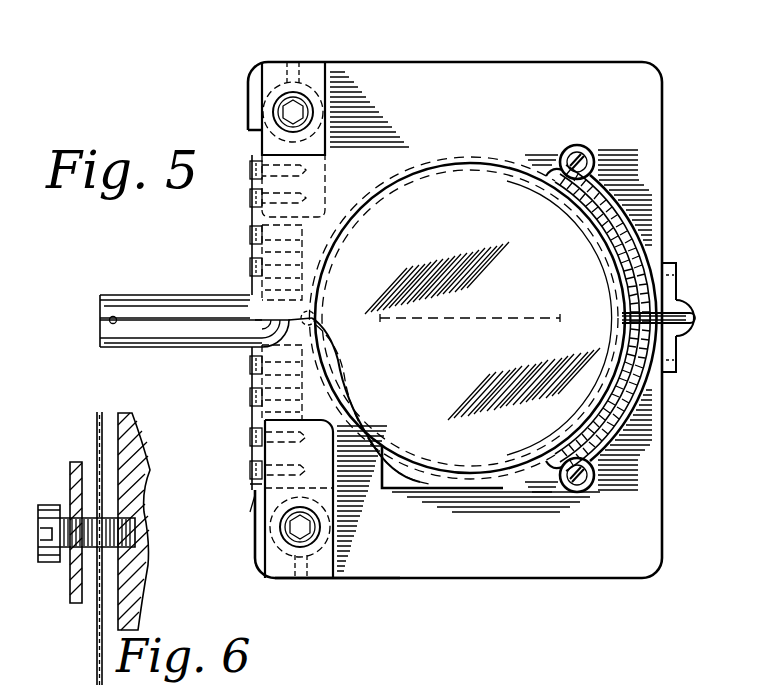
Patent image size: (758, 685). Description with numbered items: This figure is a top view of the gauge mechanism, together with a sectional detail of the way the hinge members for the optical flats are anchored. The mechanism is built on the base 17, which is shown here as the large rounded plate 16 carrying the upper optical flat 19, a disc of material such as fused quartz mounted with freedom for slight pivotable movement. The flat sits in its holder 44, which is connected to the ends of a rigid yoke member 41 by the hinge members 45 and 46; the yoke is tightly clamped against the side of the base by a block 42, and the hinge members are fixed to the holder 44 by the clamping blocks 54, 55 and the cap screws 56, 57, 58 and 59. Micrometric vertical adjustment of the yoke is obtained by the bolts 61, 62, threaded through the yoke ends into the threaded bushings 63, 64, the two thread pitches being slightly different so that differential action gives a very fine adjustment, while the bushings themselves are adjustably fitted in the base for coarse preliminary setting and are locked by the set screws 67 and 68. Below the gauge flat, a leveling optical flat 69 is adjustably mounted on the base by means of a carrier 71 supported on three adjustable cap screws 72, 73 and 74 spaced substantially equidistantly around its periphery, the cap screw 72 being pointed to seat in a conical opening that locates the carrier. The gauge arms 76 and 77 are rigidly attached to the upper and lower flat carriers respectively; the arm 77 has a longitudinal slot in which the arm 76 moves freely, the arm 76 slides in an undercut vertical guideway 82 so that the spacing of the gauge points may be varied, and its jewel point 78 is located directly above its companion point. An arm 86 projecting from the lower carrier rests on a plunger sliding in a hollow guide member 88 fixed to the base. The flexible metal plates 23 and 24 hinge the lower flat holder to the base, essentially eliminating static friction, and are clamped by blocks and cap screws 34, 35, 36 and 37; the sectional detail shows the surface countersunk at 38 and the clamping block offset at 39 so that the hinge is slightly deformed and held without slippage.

In FIG. 5, the mounting body 16 is at (350, 580).
In FIG. 5, the base 17 is at (560, 580).
In FIG. 5, the upper optical flat 19 is at (455, 175).
In FIG. 5, the flexible metal plate 23 is at (258, 500).
In FIG. 5, the flexible metal plate 24 is at (258, 150).
In FIG. 6, the flexible metal plate 24 is at (98, 410).
In FIG. 5, the cap screw 34 is at (250, 397).
In FIG. 5, the cap screw 35 is at (250, 365).
In FIG. 5, the cap screw 36 is at (250, 267).
In FIG. 5, the cap screw 37 is at (250, 235).
In FIG. 6, the countersunk surface 38 is at (138, 512).
In FIG. 6, the offset of clamping block 39 is at (75, 512).
In FIG. 5, the yoke member 41 is at (330, 495).
In FIG. 5, the block 42 is at (250, 505).
In FIG. 5, the holder 44 is at (470, 488).
In FIG. 5, the hinge member 45 is at (262, 230).
In FIG. 5, the hinge member 46 is at (262, 418).
In FIG. 5, the clamping block 54 is at (262, 150).
In FIG. 5, the clamping block 55 is at (255, 488).
In FIG. 5, the cap screw 56 is at (250, 170).
In FIG. 5, the cap screw 57 is at (250, 198).
In FIG. 5, the cap screw 58 is at (250, 437).
In FIG. 5, the cap screw 59 is at (250, 470).
In FIG. 5, the bolt 61 is at (297, 108).
In FIG. 5, the bolt 62 is at (290, 548).
In FIG. 5, the threaded bushing 63 is at (275, 86).
In FIG. 5, the threaded bushing 64 is at (278, 548).
In FIG. 5, the set screw 67 is at (293, 62).
In FIG. 5, the set screw 68 is at (302, 578).
In FIG. 5, the leveling optical flat 69 is at (640, 240).
In FIG. 5, the carrier 71 is at (612, 190).
In FIG. 5, the cap screw 72 is at (340, 335).
In FIG. 5, the cap screw 73 is at (577, 486).
In FIG. 5, the cap screw 74 is at (577, 152).
In FIG. 5, the gauge arm 76 is at (140, 312).
In FIG. 5, the gauge arm 77 is at (170, 347).
In FIG. 5, the jewel point 78 is at (110, 320).
In FIG. 5, the undercut vertical guideway 82 is at (295, 308).
In FIG. 5, the arm 86 is at (692, 318).
In FIG. 5, the hollow guide member 88 is at (685, 336).